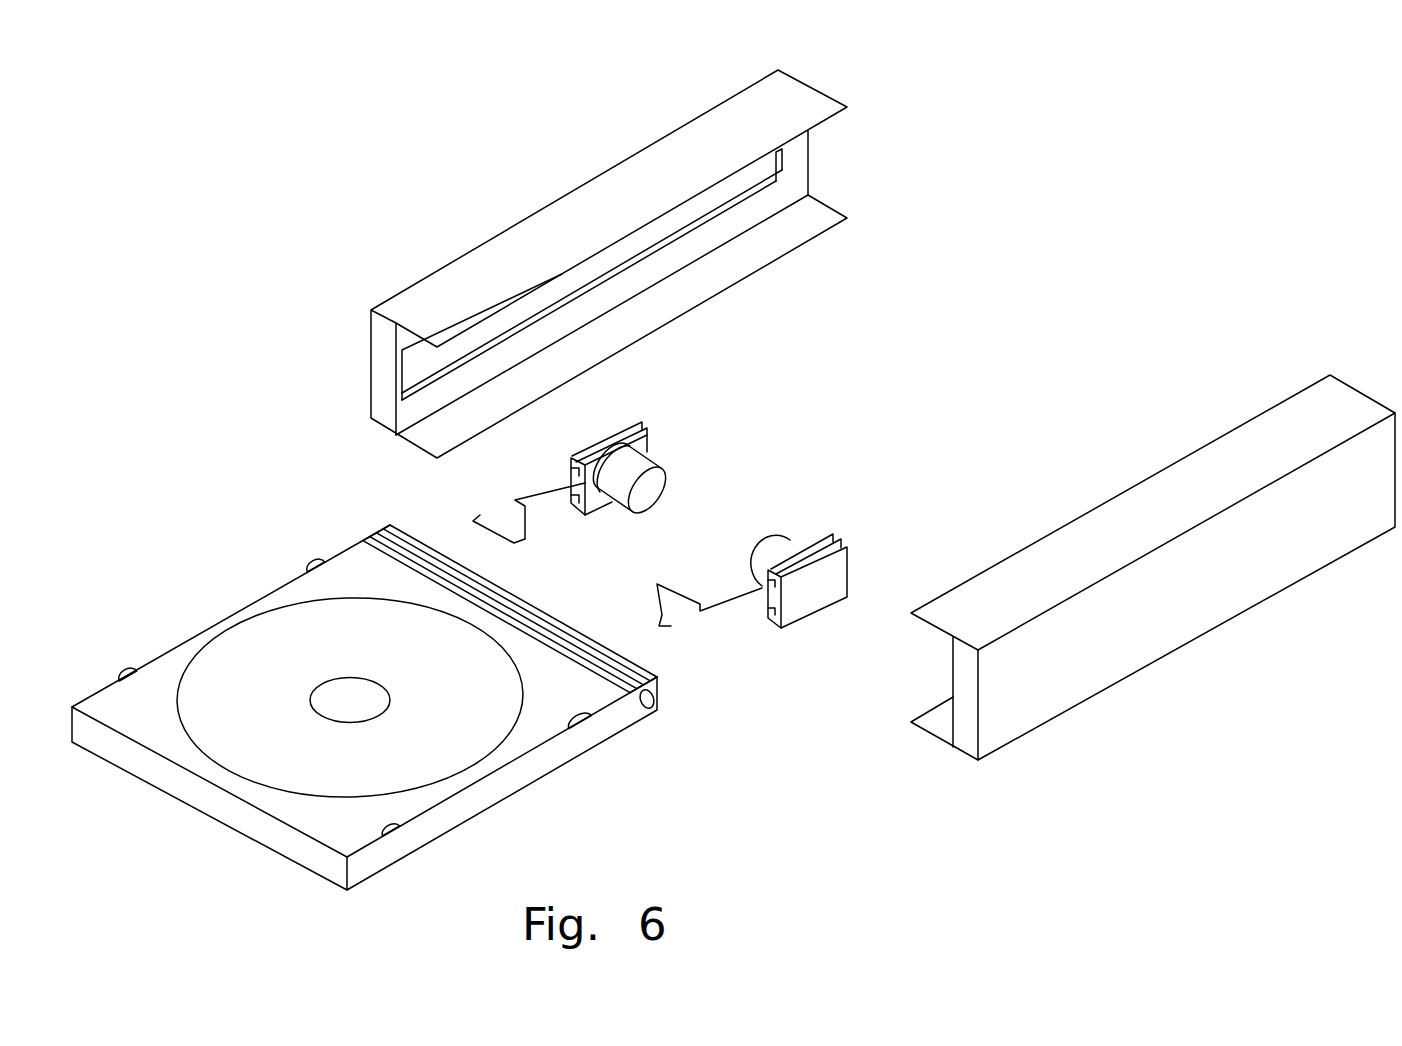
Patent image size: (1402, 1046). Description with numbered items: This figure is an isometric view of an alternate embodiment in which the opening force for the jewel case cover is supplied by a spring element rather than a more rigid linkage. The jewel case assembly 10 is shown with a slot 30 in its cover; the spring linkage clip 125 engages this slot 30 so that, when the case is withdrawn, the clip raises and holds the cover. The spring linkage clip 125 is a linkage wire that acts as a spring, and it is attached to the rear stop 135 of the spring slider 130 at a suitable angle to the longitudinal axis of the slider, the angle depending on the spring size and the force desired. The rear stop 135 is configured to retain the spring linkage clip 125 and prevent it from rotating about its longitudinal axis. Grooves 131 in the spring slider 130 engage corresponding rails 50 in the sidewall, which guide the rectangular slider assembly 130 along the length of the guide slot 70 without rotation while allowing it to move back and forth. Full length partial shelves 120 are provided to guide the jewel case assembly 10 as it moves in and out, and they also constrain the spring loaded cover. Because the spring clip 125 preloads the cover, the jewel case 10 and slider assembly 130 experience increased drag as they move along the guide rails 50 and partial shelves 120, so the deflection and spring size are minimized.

The jewel case assembly 10 is at (371, 682).
The slot 30 is at (594, 723).
The rails 50 is at (737, 204).
The guide slot 70 is at (633, 243).
The partial shelves 120 is at (673, 264).
The spring linkage clip 125 is at (703, 610).
The spring slider 130 is at (813, 595).
The grooves 131 is at (640, 420).
The rear stop 135 is at (667, 472).